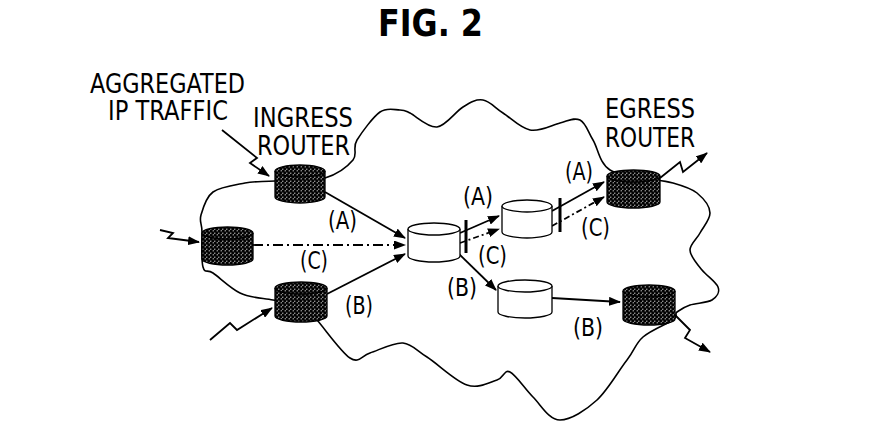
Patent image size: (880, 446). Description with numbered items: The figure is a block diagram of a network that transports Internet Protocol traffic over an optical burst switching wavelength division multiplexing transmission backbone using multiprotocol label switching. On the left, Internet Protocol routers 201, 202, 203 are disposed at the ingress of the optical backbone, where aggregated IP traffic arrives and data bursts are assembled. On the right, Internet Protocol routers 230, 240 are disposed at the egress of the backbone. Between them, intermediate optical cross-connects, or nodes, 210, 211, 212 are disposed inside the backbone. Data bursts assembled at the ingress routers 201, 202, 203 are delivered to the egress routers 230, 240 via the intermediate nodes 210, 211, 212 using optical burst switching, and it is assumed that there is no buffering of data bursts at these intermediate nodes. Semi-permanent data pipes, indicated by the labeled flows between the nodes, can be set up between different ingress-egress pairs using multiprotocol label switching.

The Internet Protocol router 201 is at (327, 180).
The Internet Protocol router 202 is at (253, 232).
The Internet Protocol router 203 is at (298, 322).
The intermediate optical cross-connect 210 is at (432, 223).
The intermediate optical cross-connect 211 is at (527, 200).
The intermediate optical cross-connect 212 is at (525, 318).
The Internet Protocol router 230 is at (660, 190).
The Internet Protocol router 240 is at (675, 302).